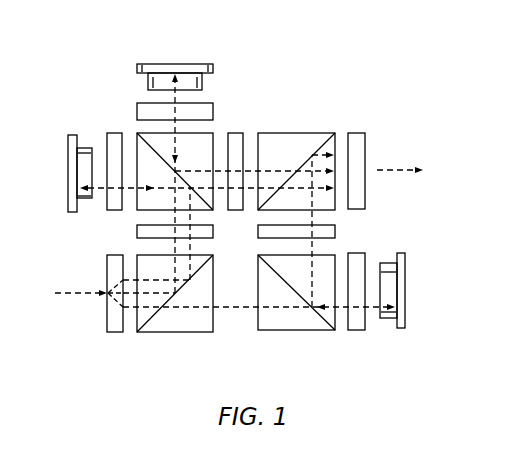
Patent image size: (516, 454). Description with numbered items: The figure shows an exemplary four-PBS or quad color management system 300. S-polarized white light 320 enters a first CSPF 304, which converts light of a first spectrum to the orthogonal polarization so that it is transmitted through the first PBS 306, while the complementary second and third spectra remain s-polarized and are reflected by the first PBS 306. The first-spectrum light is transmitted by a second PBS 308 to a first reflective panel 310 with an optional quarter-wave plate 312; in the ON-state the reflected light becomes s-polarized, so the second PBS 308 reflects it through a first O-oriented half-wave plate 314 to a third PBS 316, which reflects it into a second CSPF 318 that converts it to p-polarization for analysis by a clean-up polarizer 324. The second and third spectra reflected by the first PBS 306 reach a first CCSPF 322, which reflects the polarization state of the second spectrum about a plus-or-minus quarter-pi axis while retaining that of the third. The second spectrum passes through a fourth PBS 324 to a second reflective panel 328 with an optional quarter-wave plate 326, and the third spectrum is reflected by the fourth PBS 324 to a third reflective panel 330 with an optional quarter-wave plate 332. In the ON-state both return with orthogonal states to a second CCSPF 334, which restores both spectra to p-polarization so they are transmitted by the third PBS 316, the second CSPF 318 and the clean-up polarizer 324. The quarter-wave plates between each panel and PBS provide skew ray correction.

The quad color management system 300 is at (304, 67).
The first color selective polarization filter 304 is at (116, 333).
The first polarizing beam splitter 306 is at (168, 333).
The second polarizing beam splitter 308 is at (300, 331).
The first reflective panel 310 is at (407, 289).
The quarter-wave plate 312 is at (357, 331).
The first O-oriented half-wave plate 314 is at (336, 229).
The third polarizing beam splitter 316 is at (295, 133).
The second color selective polarization filter 318 is at (357, 133).
The s-polarized white light 320 is at (76, 296).
The first compensating color selective polarization filter 322 is at (137, 232).
The fourth polarizing beam splitter 324 is at (203, 212).
The quarter-wave plate 326 is at (137, 108).
The second reflective panel 328 is at (160, 64).
The third reflective panel 330 is at (68, 177).
The quarter-wave plate 332 is at (115, 133).
The second compensating color selective polarization filter 334 is at (237, 133).